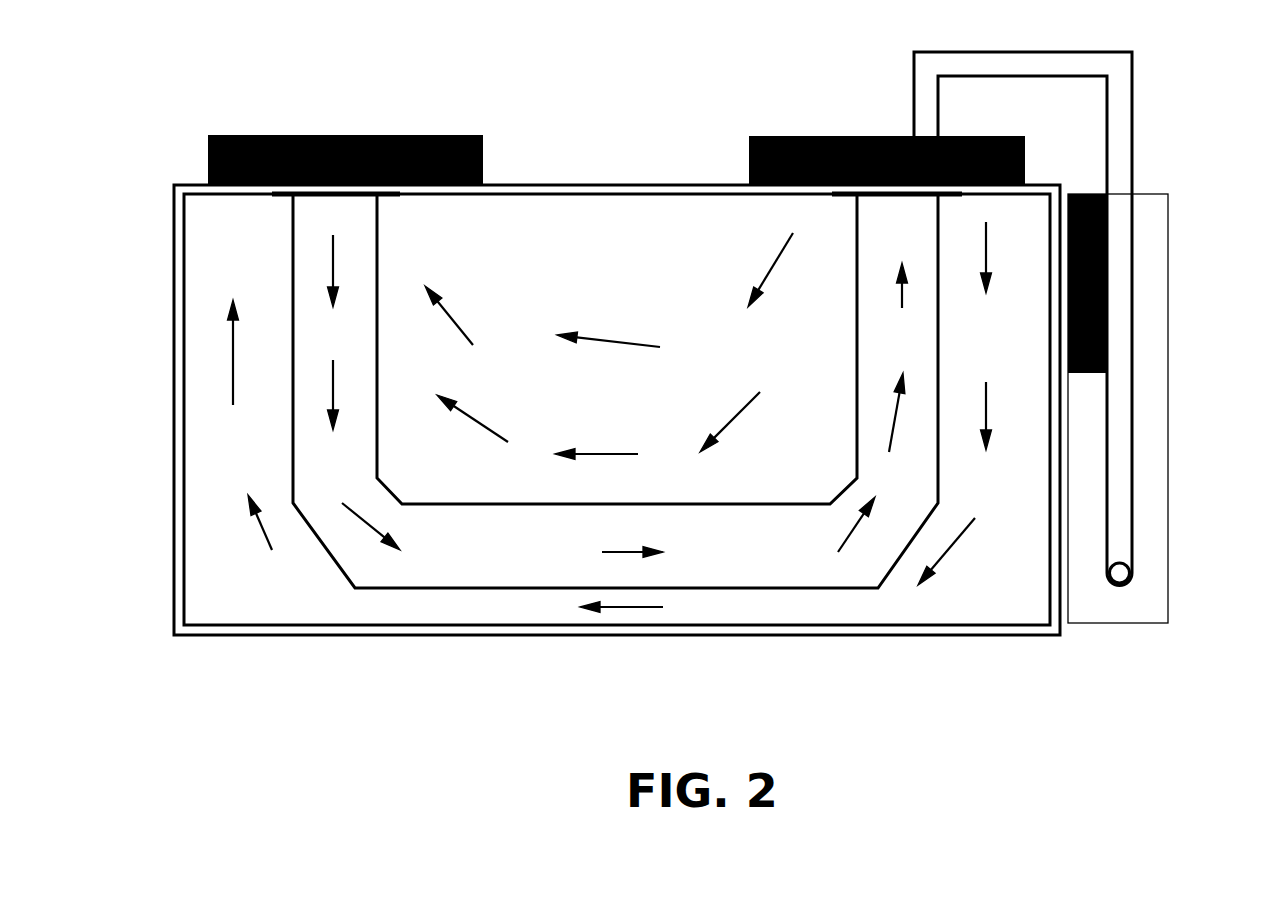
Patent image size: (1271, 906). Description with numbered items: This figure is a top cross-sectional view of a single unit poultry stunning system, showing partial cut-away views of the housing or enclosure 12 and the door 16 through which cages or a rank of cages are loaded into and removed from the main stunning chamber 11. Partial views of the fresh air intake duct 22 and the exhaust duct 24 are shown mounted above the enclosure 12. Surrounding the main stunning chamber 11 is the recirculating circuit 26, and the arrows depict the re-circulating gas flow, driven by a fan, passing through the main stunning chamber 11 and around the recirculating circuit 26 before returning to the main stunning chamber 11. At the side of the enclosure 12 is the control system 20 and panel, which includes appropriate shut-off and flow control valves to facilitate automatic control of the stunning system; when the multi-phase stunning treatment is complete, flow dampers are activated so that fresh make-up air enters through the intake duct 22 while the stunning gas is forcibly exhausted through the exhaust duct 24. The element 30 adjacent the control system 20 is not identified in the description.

The stunning chamber 11 is at (643, 407).
The enclosure 12 is at (243, 637).
The door 16 is at (175, 285).
The control system 20 is at (1158, 208).
The fresh air intake duct 22 is at (825, 135).
The exhaust duct 24 is at (308, 135).
The recirculating circuit 26 is at (760, 562).
The conduit 30 is at (985, 53).